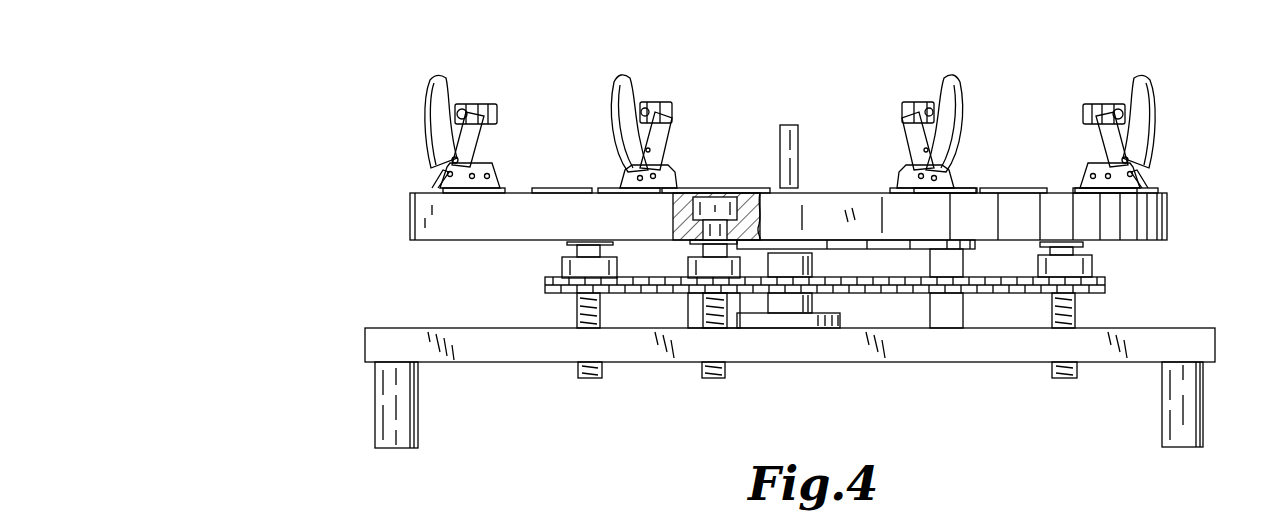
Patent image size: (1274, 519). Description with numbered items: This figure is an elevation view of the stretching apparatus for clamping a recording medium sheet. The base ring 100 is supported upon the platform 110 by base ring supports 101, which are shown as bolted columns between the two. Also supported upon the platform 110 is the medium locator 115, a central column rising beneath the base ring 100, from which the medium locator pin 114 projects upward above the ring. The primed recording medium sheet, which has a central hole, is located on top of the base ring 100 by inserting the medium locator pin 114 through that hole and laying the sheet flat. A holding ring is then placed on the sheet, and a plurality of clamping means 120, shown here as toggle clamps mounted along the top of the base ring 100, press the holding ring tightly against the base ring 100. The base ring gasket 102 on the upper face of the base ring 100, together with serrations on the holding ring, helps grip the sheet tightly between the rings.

The base ring 100 is at (1167, 207).
The base ring supports 101 is at (600, 377).
The base ring gasket 102 is at (1023, 188).
The platform 110 is at (1197, 330).
The medium locator pin 114 is at (798, 138).
The medium locator 115 is at (812, 268).
The clamping means 120 is at (620, 97).